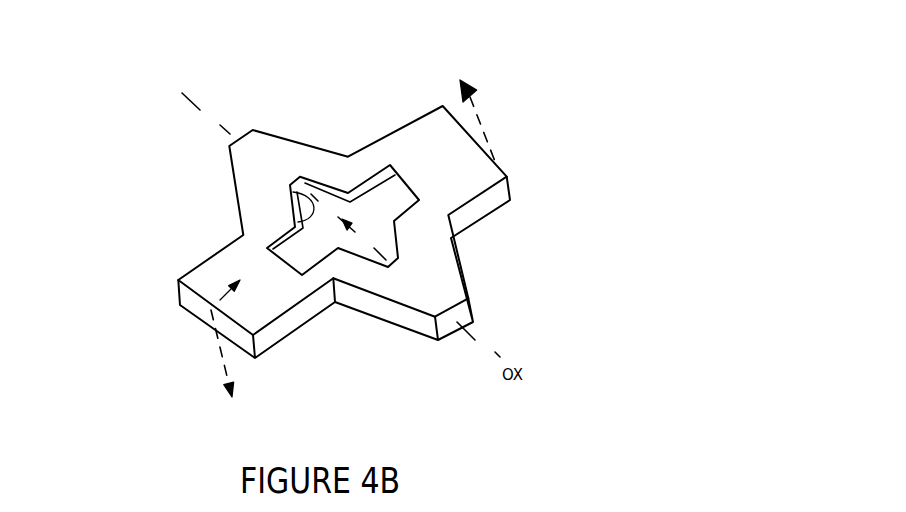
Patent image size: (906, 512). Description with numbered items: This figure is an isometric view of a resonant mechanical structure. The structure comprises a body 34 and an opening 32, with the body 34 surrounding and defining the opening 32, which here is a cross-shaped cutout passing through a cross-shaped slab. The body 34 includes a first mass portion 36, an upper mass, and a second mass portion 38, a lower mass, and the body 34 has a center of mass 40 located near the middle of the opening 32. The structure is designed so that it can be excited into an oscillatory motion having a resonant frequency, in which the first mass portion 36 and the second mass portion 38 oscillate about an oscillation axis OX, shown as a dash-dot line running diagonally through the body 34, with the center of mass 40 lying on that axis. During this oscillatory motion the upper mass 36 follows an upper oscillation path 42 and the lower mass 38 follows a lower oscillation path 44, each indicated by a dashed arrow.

The opening 32 is at (300, 198).
The body 34 is at (423, 288).
The first mass portion 36 is at (423, 153).
The second mass portion 38 is at (203, 275).
The center of mass 40 is at (348, 224).
The upper oscillation path 42 is at (490, 130).
The lower oscillation path 44 is at (207, 347).